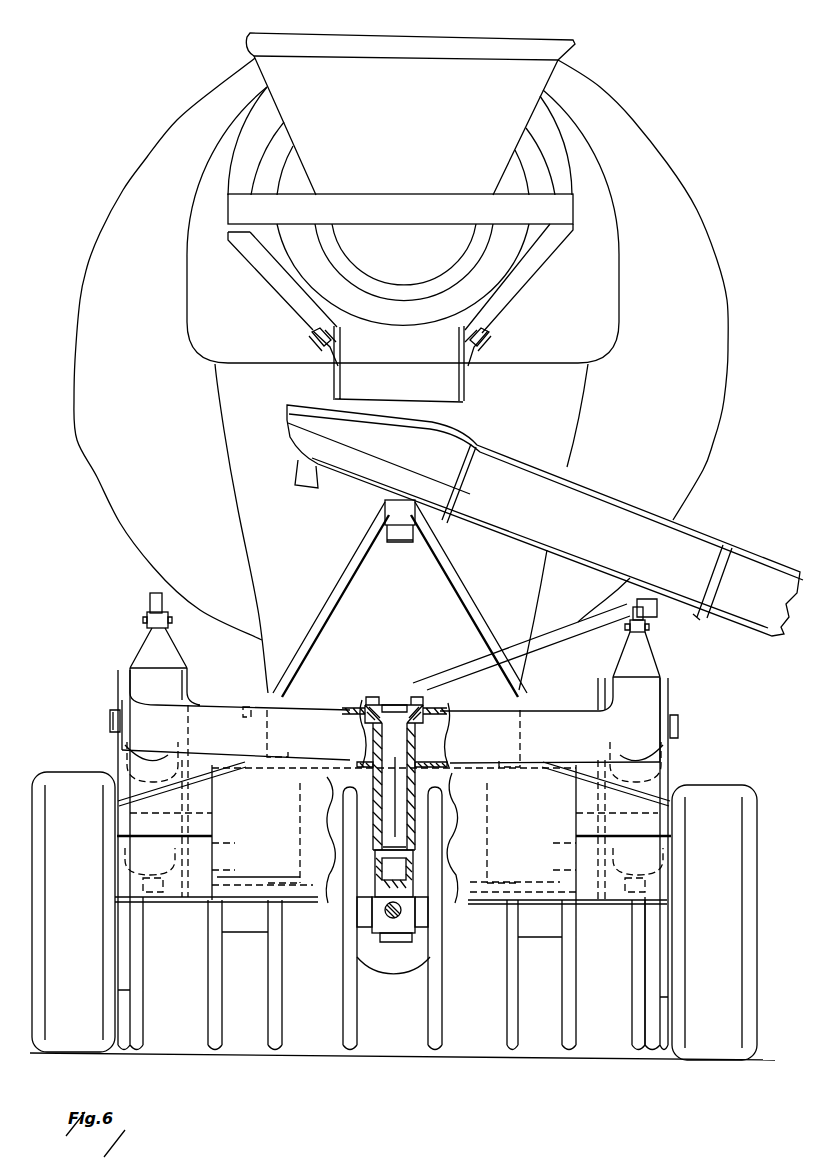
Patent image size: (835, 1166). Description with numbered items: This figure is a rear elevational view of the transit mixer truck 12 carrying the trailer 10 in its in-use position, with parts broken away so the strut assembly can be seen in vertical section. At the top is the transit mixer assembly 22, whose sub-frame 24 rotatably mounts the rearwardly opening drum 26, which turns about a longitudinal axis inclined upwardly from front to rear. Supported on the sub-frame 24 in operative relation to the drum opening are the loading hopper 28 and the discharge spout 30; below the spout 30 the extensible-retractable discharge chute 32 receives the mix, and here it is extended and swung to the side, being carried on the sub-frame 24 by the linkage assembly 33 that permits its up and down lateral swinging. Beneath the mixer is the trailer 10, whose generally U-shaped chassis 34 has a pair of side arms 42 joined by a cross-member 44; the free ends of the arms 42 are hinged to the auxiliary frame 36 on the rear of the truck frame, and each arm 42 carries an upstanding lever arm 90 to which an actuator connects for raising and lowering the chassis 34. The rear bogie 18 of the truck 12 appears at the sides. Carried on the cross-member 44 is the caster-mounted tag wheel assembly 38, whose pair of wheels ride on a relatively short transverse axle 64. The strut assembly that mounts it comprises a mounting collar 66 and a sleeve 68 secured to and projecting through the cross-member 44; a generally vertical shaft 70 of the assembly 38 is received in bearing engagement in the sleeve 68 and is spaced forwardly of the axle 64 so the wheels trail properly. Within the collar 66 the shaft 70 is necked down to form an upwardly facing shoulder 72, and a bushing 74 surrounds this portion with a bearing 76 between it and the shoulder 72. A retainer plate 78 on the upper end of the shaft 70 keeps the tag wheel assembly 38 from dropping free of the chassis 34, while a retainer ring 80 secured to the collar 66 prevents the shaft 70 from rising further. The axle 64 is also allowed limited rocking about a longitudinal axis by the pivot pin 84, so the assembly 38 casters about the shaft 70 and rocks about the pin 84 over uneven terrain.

The trailer 10 is at (130, 646).
The transit mixer truck 12 is at (92, 478).
The axle-wheel assembly or bogie 18 is at (735, 887).
The transit mixer assembly 22 is at (729, 279).
The sub-frame 24 is at (247, 531).
The drum 26 is at (633, 127).
The loading hopper 28 is at (484, 42).
The discharge spout 30 is at (463, 393).
The extensible-retractable discharge chute 32 is at (580, 488).
The linkage assembly 33 is at (571, 606).
The chassis 34 is at (647, 691).
The auxiliary frame 36 is at (676, 766).
The tag wheel assembly 38 is at (466, 1036).
The side arms 42 is at (163, 682).
The cross-member 44 is at (552, 718).
The axle 64 is at (362, 922).
The mounting collar 66 is at (447, 715).
The sleeve 68 is at (414, 832).
The shaft 70 is at (398, 805).
The shoulder 72 is at (418, 725).
The bushing 74 is at (365, 713).
The bearing 76 is at (377, 722).
The retainer plate 78 is at (388, 690).
The retainer ring 80 is at (368, 691).
The pivot pin 84 is at (392, 918).
The lever arm 90 is at (151, 606).